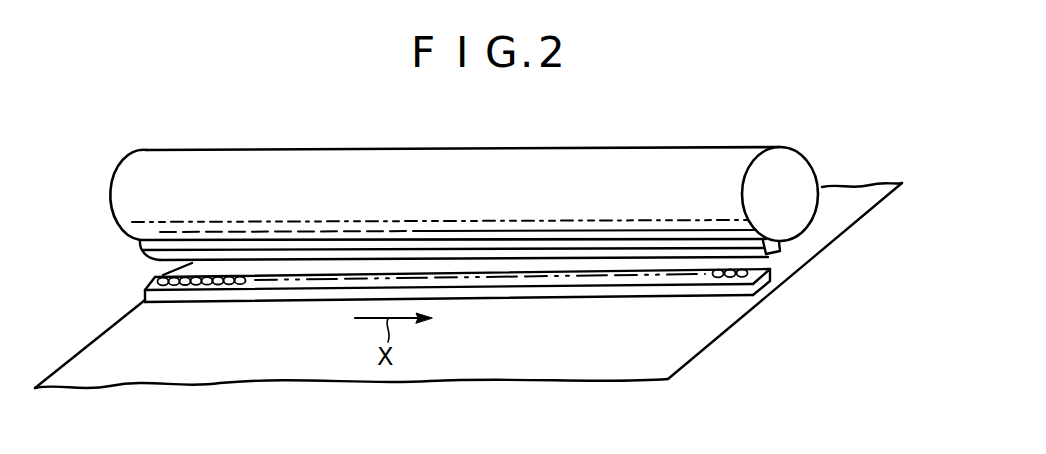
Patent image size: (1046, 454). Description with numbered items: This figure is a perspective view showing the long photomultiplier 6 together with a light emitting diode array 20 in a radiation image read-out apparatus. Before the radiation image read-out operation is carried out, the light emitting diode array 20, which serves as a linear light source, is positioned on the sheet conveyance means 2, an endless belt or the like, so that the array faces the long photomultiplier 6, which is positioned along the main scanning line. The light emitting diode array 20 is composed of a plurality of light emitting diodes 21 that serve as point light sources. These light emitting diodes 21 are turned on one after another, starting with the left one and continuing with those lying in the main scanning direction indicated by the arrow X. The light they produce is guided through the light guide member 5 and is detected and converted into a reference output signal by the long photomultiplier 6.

The sheet conveyance means 2 is at (830, 225).
The light guide member 5 is at (778, 246).
The long photomultiplier 6 is at (710, 163).
The light emitting diode array 20 is at (205, 307).
The light emitting diodes 21 is at (157, 281).